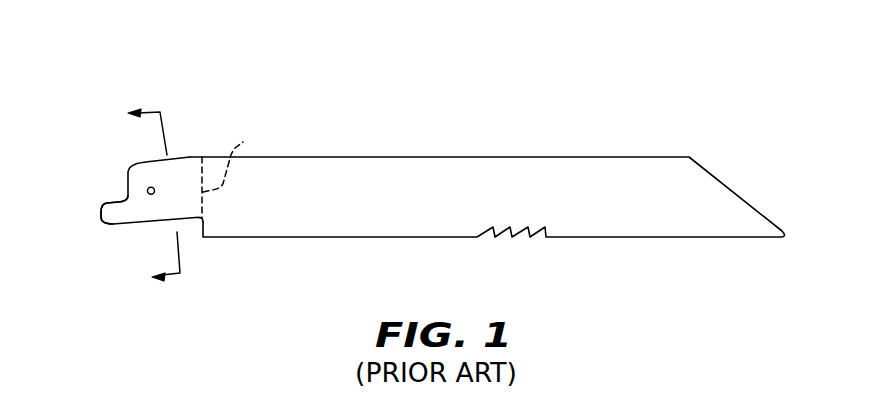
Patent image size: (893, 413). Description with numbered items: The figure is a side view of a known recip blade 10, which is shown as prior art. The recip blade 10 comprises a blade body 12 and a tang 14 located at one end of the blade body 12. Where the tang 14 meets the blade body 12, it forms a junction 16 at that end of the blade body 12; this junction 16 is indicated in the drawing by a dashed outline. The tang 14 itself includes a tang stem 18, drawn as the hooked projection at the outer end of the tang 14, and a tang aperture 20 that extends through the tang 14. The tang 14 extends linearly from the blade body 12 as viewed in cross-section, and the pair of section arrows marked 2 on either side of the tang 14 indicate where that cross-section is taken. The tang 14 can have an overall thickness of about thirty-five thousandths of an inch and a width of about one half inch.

The recip blade 10 is at (477, 73).
The blade body 12 is at (512, 175).
The tang 14 is at (150, 169).
The junction 16 is at (233, 157).
The tang stem 18 is at (112, 215).
The tang aperture 20 is at (147, 190).
The section line 2- 2 is at (156, 197).